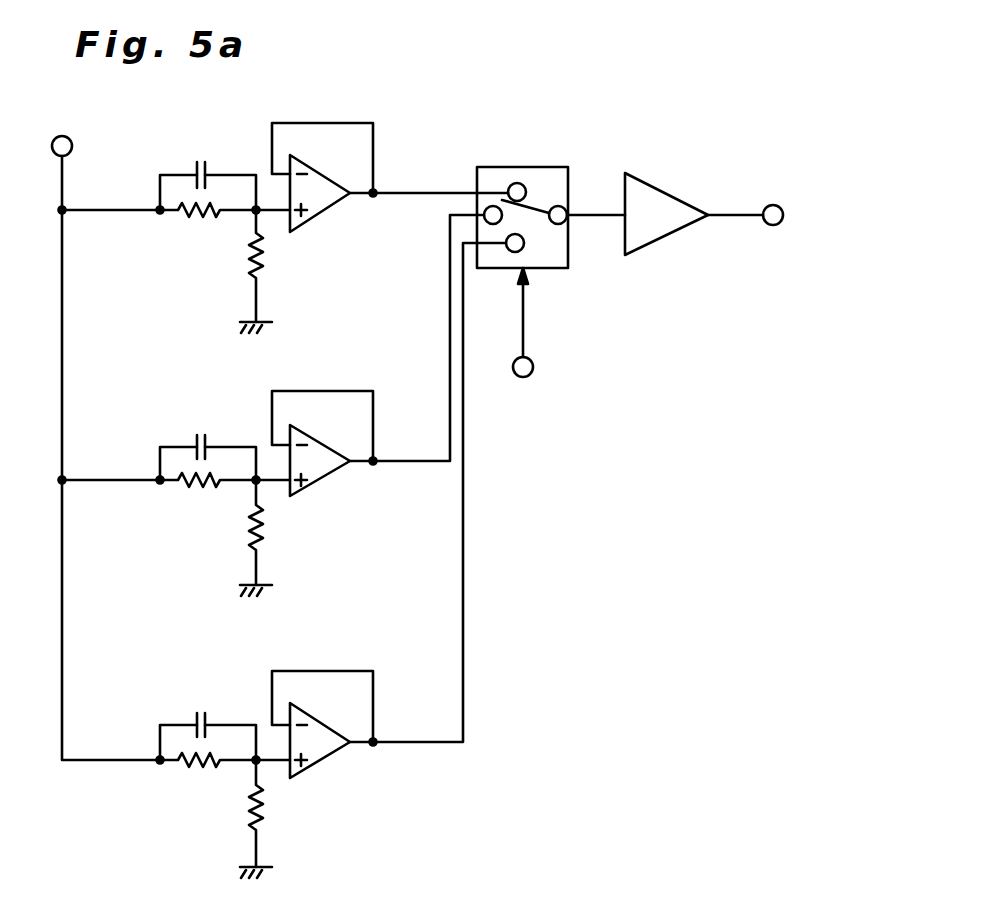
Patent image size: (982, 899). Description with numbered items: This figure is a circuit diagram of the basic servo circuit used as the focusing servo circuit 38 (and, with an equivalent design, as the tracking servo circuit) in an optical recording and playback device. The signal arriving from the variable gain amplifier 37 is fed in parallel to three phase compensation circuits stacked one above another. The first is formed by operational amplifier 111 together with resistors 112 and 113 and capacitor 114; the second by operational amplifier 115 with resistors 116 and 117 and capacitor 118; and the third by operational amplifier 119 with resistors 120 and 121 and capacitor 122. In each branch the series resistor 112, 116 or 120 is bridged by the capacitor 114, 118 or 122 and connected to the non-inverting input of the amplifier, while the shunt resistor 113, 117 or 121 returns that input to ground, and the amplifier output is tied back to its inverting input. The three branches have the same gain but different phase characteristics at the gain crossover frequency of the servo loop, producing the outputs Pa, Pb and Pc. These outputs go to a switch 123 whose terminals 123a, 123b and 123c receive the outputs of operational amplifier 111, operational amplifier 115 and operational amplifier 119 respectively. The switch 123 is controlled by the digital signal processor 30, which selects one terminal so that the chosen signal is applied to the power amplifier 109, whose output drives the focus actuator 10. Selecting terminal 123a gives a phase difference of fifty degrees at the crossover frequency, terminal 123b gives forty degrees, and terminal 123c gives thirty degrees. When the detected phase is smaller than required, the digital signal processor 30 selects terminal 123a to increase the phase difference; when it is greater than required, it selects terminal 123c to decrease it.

The variable gain amplifier 37 is at (91, 432).
The focusing servo circuit 38 is at (327, 94).
The capacitor 114 is at (200, 162).
The resistor 112 is at (200, 213).
The resistor 113 is at (262, 258).
The operational amplifier 111 is at (320, 225).
The capacitor 118 is at (203, 435).
The resistor 116 is at (195, 485).
The resistor 117 is at (262, 527).
The operational amplifier 115 is at (325, 478).
The capacitor 122 is at (200, 712).
The resistor 120 is at (200, 765).
The resistor 121 is at (262, 805).
The operational amplifier 119 is at (325, 762).
The switch 123 is at (502, 193).
The terminal 123a is at (512, 183).
The terminal 123b is at (488, 208).
The terminal 123c is at (522, 250).
The digital signal processor 30 is at (526, 340).
The power amplifier 109 is at (660, 187).
The focus actuator 10 is at (816, 215).